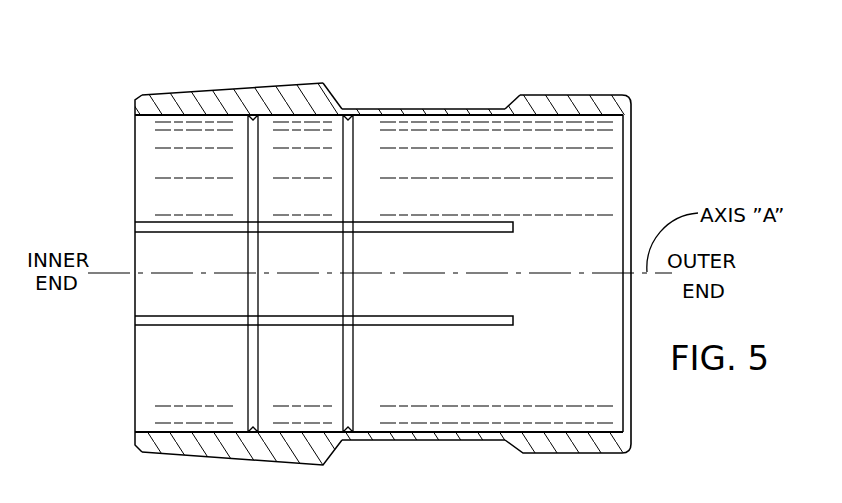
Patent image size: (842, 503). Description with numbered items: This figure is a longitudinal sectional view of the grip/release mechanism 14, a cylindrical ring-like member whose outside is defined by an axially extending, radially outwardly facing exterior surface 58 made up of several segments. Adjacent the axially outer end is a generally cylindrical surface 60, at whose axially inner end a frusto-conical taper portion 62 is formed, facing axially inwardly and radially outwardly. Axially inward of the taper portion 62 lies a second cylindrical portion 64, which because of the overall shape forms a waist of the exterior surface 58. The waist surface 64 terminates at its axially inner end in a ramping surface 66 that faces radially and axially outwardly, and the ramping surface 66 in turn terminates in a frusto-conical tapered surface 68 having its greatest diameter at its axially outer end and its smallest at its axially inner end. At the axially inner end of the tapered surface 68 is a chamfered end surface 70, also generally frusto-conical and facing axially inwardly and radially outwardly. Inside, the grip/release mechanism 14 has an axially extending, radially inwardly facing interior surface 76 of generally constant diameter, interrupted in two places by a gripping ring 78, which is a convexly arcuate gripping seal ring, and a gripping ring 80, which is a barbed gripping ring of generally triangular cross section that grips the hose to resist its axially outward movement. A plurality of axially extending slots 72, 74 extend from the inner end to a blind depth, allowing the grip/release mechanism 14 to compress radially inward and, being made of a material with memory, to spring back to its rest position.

The grip/release mechanism 14 is at (661, 126).
The exterior surface 58 is at (568, 80).
The cylindrical surface 60 is at (590, 93).
The taper portion 62 is at (512, 98).
The second cylindrical portion 64 is at (433, 108).
The ramping surface 66 is at (333, 88).
The tapered surface 68 is at (277, 85).
The chamfered end surface 70 is at (134, 106).
The slot 72 is at (392, 232).
The slot 74 is at (403, 315).
The interior surface 76 is at (570, 430).
The gripping ring 78 is at (350, 430).
The gripping ring 80 is at (258, 432).